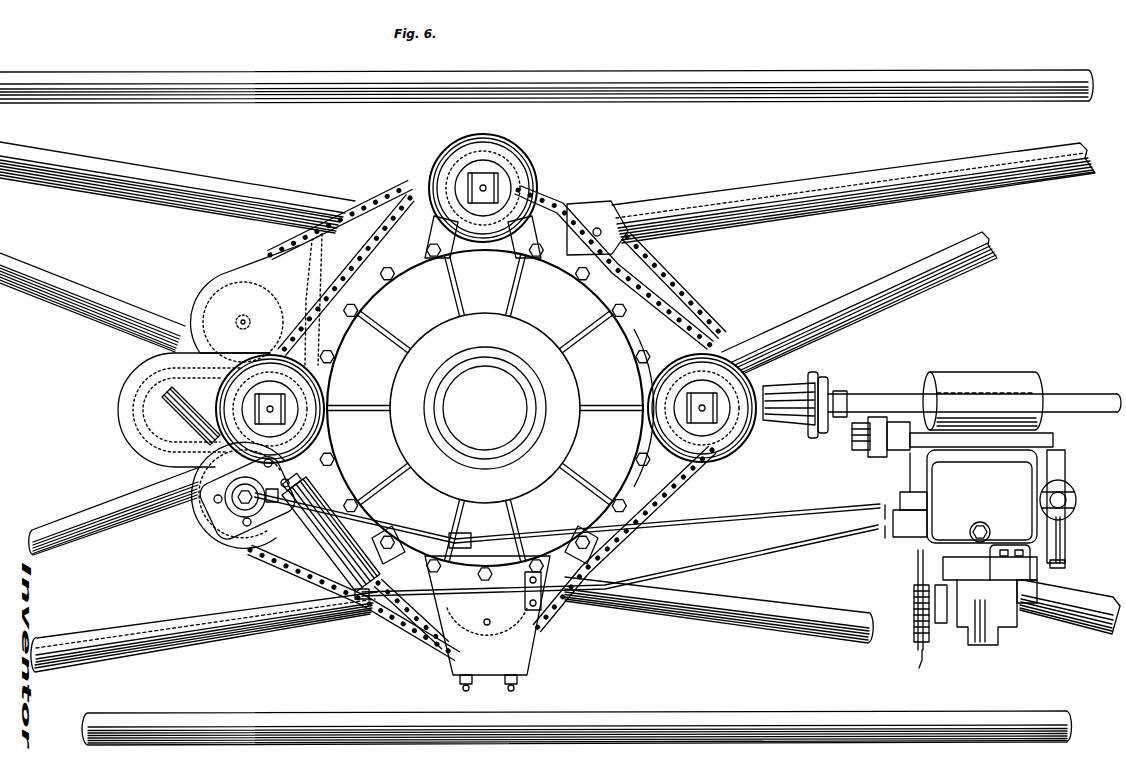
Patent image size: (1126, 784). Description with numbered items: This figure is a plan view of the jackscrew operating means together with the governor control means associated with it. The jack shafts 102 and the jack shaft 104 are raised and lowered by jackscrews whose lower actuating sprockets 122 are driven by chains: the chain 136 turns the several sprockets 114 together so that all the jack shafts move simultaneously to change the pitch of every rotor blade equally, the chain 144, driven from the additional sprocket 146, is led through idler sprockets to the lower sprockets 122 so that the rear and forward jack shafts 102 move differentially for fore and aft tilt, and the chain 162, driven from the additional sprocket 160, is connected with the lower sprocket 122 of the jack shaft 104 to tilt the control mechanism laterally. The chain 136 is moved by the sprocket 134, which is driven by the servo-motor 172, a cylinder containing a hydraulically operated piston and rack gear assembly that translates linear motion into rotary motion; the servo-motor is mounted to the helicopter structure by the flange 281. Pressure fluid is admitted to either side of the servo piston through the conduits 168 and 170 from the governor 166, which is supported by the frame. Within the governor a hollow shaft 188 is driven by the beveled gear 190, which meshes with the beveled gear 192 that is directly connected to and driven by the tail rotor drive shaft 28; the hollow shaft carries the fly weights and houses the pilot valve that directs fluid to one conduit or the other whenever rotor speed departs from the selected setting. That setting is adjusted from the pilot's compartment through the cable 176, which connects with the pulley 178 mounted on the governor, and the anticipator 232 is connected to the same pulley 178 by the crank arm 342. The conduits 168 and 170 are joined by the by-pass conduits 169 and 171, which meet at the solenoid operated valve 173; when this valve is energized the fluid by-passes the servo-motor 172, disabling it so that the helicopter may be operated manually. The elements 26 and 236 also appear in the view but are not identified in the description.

The reel hub spider 26 is at (610, 333).
The tail rotor drive shaft 28 is at (858, 393).
The jack shaft 102 is at (320, 400).
The jack shaft 104 is at (492, 186).
The sprocket 114 is at (489, 346).
The jackscrew sprocket 122 is at (413, 173).
The sprocket 134 is at (227, 532).
The chain 136 is at (257, 552).
The chain 144 is at (651, 255).
The additional sprocket 146 is at (143, 432).
The additional sprocket 160 is at (208, 293).
The chain 162 is at (292, 250).
The governor 166 is at (1023, 613).
The conduit 168 is at (757, 554).
The by-pass conduit 169 is at (927, 494).
The conduit 170 is at (728, 516).
The by-pass conduit 171 is at (921, 393).
The servo-motor 172 is at (313, 545).
The solenoid operated valve 173 is at (902, 460).
The cable 176 is at (914, 654).
The pulley 178 is at (912, 581).
The hollow shaft 188 is at (1003, 383).
The beveled gear 190 is at (983, 401).
The beveled gear 192 is at (960, 405).
The anticipator 232 is at (1070, 483).
The bracket 236 is at (1063, 460).
The flange 281 is at (198, 515).
The crank arm 342 is at (1062, 543).